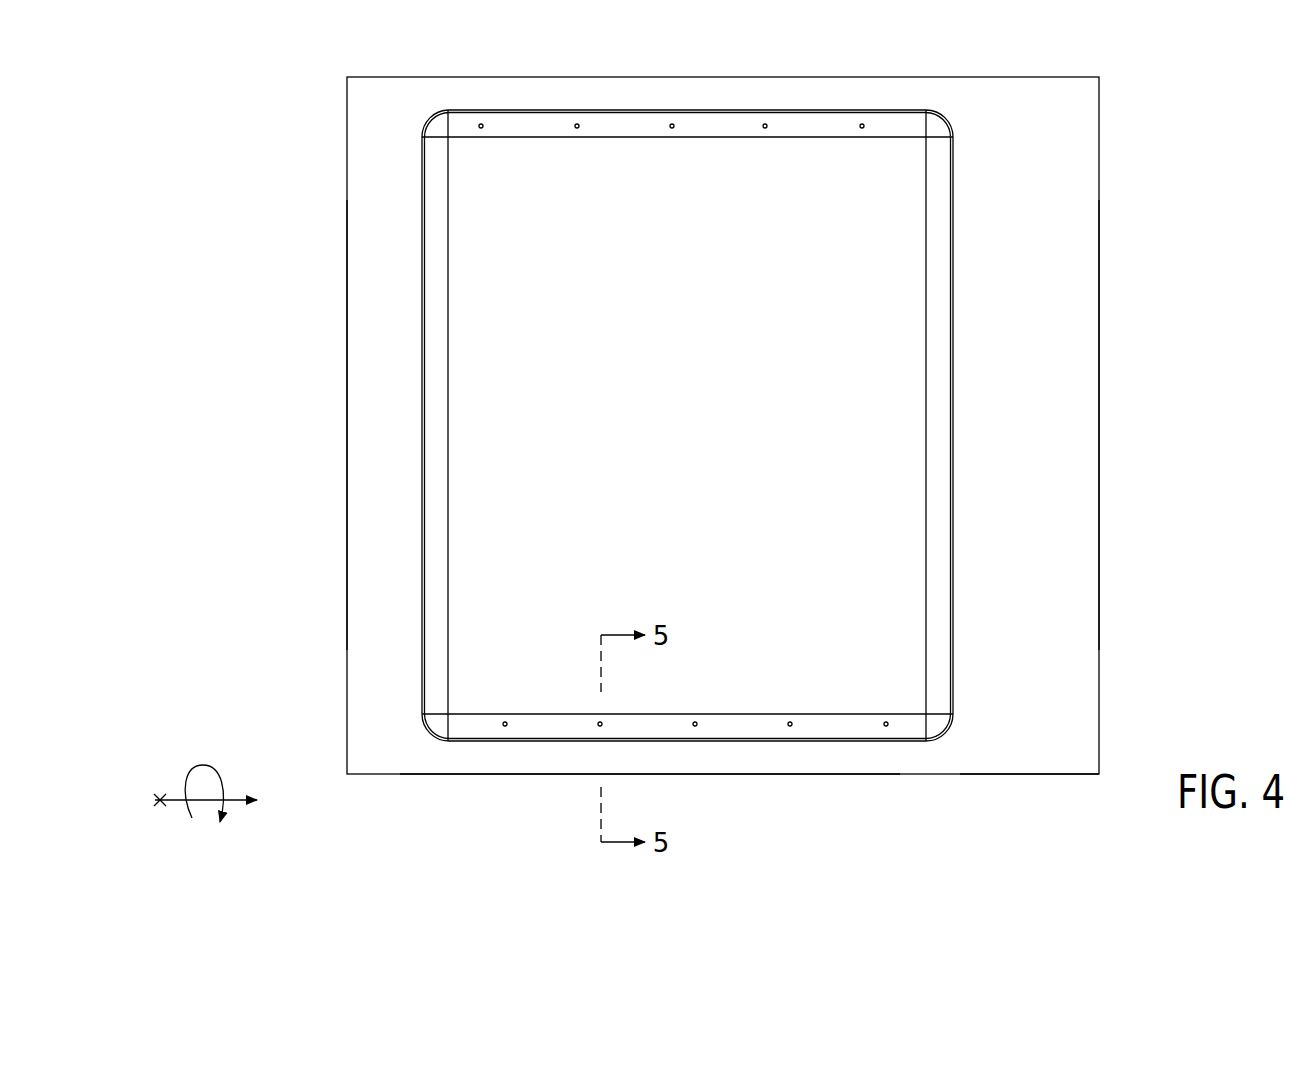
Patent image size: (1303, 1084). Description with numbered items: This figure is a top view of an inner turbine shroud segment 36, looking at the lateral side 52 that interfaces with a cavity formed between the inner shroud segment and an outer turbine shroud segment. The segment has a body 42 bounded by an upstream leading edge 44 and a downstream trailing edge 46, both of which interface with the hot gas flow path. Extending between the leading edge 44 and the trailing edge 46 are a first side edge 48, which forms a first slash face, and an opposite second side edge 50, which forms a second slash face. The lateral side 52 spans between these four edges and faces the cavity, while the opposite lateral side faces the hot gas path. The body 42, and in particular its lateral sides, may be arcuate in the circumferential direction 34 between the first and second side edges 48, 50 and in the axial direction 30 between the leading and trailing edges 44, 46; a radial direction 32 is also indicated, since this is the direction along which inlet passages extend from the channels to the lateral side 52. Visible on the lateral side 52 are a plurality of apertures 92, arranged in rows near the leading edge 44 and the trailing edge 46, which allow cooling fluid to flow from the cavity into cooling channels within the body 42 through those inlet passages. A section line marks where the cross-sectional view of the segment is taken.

The axial direction 30 is at (232, 803).
The radial direction 32 is at (160, 798).
The circumferential direction 34 is at (192, 776).
The inner turbine shroud segment 36 is at (1014, 774).
The body 42 is at (1040, 774).
The leading edge 44 is at (347, 373).
The trailing edge 46 is at (1100, 400).
The first side edge 48 is at (569, 774).
The second side edge 50 is at (686, 77).
The lateral side 52 is at (828, 176).
The apertures 92 is at (481, 128).